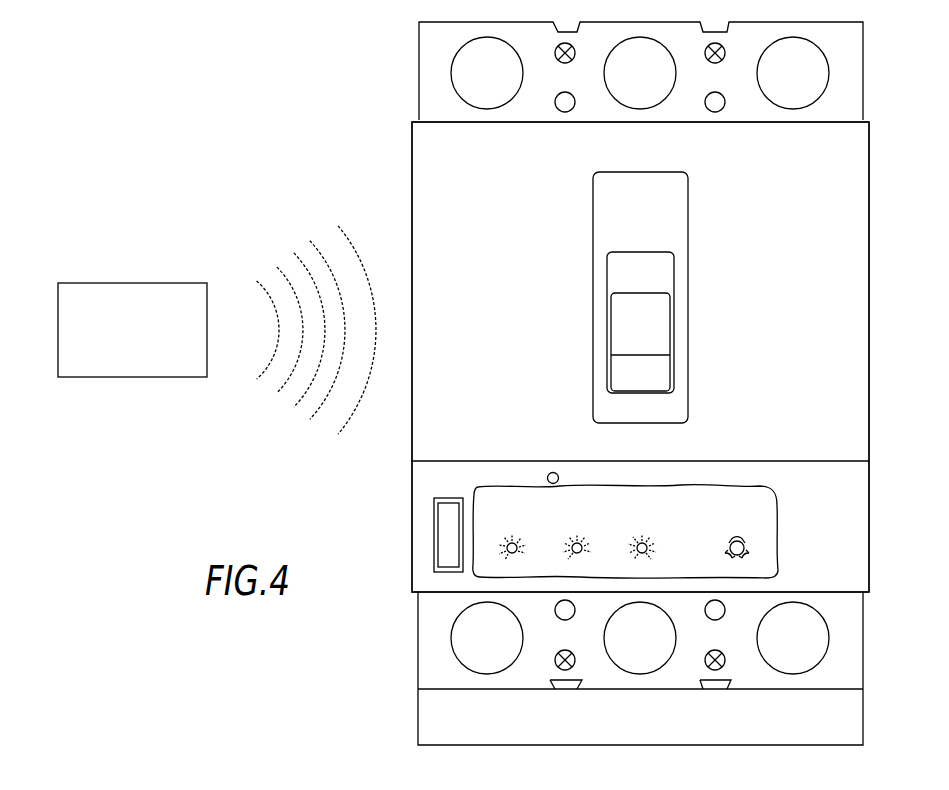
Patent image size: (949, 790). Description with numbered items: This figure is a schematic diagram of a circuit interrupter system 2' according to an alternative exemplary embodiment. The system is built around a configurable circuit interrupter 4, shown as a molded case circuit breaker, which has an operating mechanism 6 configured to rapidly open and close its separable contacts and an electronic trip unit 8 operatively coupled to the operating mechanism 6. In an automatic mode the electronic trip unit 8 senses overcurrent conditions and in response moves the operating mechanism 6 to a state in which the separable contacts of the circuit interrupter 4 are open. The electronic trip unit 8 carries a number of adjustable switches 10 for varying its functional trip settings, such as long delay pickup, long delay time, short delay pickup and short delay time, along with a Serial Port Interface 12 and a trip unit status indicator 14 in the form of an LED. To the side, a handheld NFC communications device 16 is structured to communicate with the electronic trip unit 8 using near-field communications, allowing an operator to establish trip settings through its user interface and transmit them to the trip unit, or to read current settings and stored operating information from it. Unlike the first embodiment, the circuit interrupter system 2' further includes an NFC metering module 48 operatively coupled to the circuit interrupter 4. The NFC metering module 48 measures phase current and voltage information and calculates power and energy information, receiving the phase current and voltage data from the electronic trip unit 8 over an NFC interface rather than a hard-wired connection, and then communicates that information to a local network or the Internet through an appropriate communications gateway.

The circuit interrupter system 2' is at (298, 262).
The configurable circuit interrupter 4 is at (872, 553).
The operating mechanism 6 is at (853, 165).
The electronic trip unit 8 is at (857, 498).
The adjustable switches 10 is at (773, 519).
The Serial Port Interface 12 is at (450, 510).
The trip unit status indicator 14 is at (552, 474).
The handheld NFC communications device 16 is at (162, 283).
The NFC metering module 48 is at (863, 713).